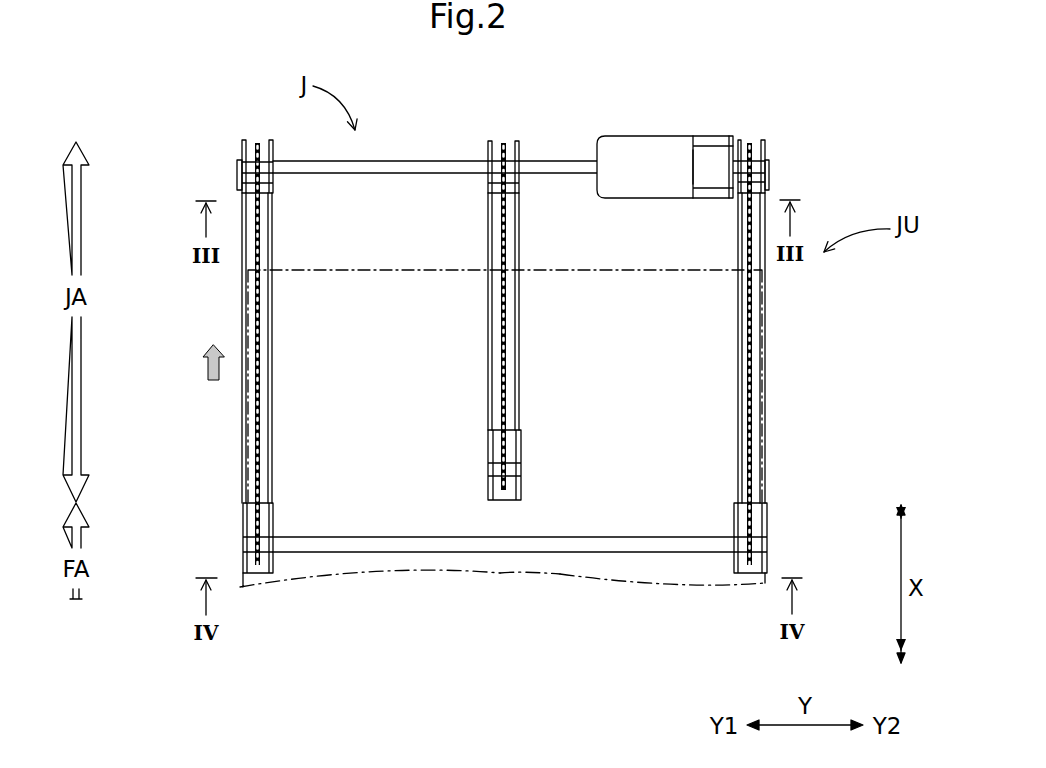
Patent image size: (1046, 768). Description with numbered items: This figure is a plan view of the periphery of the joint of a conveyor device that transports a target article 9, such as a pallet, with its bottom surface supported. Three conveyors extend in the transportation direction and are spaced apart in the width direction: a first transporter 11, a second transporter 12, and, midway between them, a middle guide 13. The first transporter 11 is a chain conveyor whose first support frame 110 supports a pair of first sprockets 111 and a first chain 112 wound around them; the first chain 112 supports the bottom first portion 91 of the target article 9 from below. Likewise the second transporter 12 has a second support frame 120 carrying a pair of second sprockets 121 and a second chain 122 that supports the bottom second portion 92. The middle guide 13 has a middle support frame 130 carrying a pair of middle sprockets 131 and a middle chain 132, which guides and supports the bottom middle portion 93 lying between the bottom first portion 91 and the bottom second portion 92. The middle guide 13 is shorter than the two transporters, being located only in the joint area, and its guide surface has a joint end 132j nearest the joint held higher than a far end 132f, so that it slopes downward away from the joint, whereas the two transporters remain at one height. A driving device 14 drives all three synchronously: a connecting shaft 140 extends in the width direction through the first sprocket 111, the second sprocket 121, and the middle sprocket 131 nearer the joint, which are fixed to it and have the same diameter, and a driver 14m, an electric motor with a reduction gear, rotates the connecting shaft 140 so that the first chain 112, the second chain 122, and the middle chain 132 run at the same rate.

The target article 9 is at (766, 321).
The first transporter 11 is at (190, 356).
The first support frame 110 is at (243, 410).
The first sprockets 111 is at (240, 183).
The first chain 112 is at (256, 436).
The second transporter 12 is at (837, 356).
The second support frame 120 is at (766, 372).
The second sprockets 121 is at (769, 181).
The second chain 122 is at (757, 425).
The middle guide 13 is at (455, 283).
The middle support frame 130 is at (488, 342).
The middle sprockets 131 is at (495, 181).
The middle chain 132 is at (500, 383).
The joint end 132j is at (508, 130).
The far end 132f is at (607, 420).
The driving device 14 is at (663, 120).
The driver 14m is at (668, 199).
The connecting shaft 140 is at (553, 175).
The bottom first portion 91 is at (286, 563).
The bottom second portion 92 is at (720, 568).
The bottom middle portion 93 is at (529, 508).